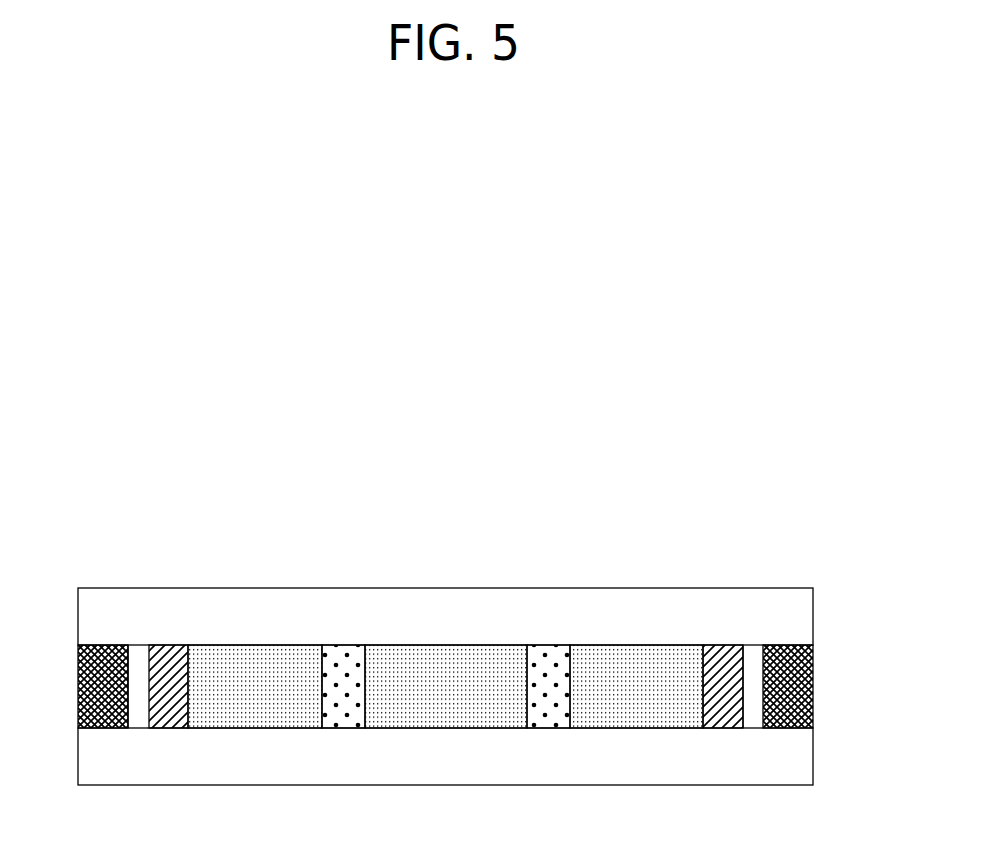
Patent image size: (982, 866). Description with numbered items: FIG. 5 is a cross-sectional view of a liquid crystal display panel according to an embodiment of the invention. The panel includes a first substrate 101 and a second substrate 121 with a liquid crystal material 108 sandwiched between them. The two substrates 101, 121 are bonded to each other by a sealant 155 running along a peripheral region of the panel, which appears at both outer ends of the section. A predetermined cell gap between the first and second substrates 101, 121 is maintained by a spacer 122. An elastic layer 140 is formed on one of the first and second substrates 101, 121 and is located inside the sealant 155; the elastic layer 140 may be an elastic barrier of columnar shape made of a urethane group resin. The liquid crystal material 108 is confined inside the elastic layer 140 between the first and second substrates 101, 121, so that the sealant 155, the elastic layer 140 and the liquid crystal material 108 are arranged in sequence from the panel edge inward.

The first substrate 101 is at (798, 617).
The second substrate 121 is at (800, 755).
The sealant 155 is at (78, 690).
The elastic layer 140 is at (173, 658).
The liquid crystal material 108 is at (467, 705).
The spacer 122 is at (345, 660).